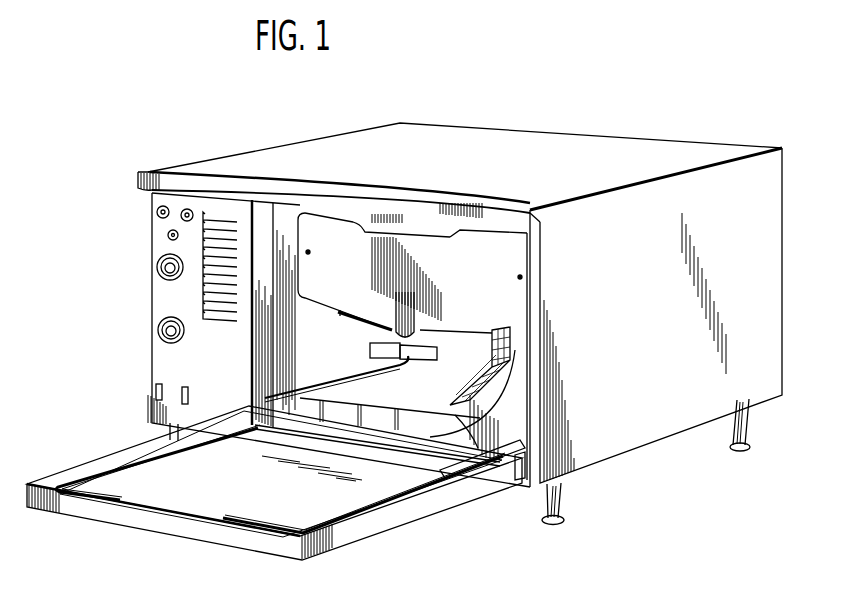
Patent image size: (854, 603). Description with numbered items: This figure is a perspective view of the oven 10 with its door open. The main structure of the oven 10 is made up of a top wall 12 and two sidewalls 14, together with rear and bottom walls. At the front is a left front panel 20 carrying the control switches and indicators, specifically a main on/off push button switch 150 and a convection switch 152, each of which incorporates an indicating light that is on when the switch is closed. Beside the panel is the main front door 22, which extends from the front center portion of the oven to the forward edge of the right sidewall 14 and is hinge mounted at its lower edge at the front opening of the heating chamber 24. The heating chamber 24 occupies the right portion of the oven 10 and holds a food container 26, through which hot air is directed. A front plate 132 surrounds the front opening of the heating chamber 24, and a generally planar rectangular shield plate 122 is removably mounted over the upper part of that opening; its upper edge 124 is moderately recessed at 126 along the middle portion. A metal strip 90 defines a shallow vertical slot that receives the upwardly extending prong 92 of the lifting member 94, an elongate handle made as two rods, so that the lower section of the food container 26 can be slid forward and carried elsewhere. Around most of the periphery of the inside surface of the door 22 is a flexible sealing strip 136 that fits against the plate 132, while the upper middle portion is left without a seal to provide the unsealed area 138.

The oven 10 is at (574, 124).
The top wall 12 is at (640, 145).
The sidewall 14 is at (622, 288).
The left front panel 20 is at (157, 298).
The main front door 22 is at (375, 525).
The heating chamber 24 is at (462, 455).
The food container 26 is at (508, 352).
The metal strip 90 is at (432, 355).
The prong 92 is at (392, 318).
The lifting member 94 is at (262, 430).
The shield plate 122 is at (478, 284).
The upper edge 124 is at (333, 220).
The recess 126 is at (423, 235).
The front plate 132 is at (512, 395).
The flexible sealing strip 136 is at (418, 487).
The unsealed area 138 is at (165, 512).
The main on/off push button switch 150 is at (156, 393).
The convection switch 152 is at (175, 405).